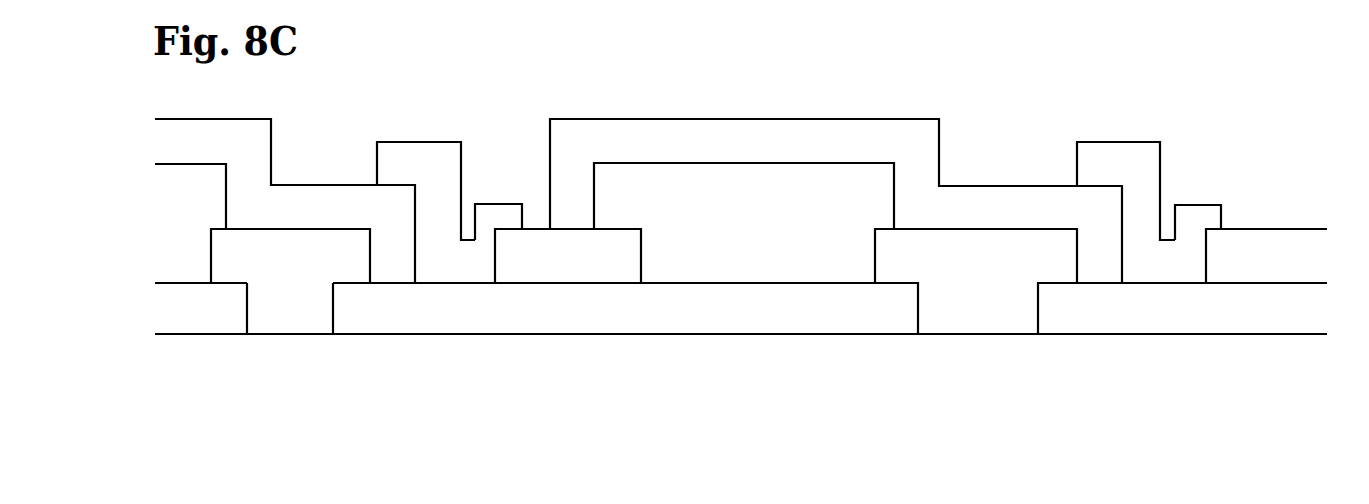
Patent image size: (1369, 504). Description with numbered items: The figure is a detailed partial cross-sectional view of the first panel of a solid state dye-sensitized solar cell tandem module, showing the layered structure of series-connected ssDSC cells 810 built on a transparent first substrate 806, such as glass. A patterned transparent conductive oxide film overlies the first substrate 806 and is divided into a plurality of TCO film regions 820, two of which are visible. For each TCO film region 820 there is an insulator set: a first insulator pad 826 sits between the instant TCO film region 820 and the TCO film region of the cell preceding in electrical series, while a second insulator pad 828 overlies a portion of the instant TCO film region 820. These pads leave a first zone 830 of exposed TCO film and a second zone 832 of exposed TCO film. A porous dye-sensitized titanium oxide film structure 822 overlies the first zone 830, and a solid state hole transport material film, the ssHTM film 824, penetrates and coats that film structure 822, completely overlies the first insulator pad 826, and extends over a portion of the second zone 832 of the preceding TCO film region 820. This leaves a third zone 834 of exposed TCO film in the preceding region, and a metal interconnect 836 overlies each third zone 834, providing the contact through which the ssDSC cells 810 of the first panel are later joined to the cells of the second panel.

The first substrate 806 is at (715, 389).
The ssDSC cell 810 is at (1005, 62).
The TCO film region 820 is at (825, 322).
The dye-sensitized titanium oxide film structure 822 is at (646, 208).
The ssHTM film 824 is at (718, 153).
The first insulator pad 826 is at (268, 285).
The second insulator pad 828 is at (581, 255).
The first zone 830 is at (875, 283).
The second zone 832 is at (1206, 286).
The third zone 834 is at (1206, 286).
The metal interconnect 836 is at (497, 203).